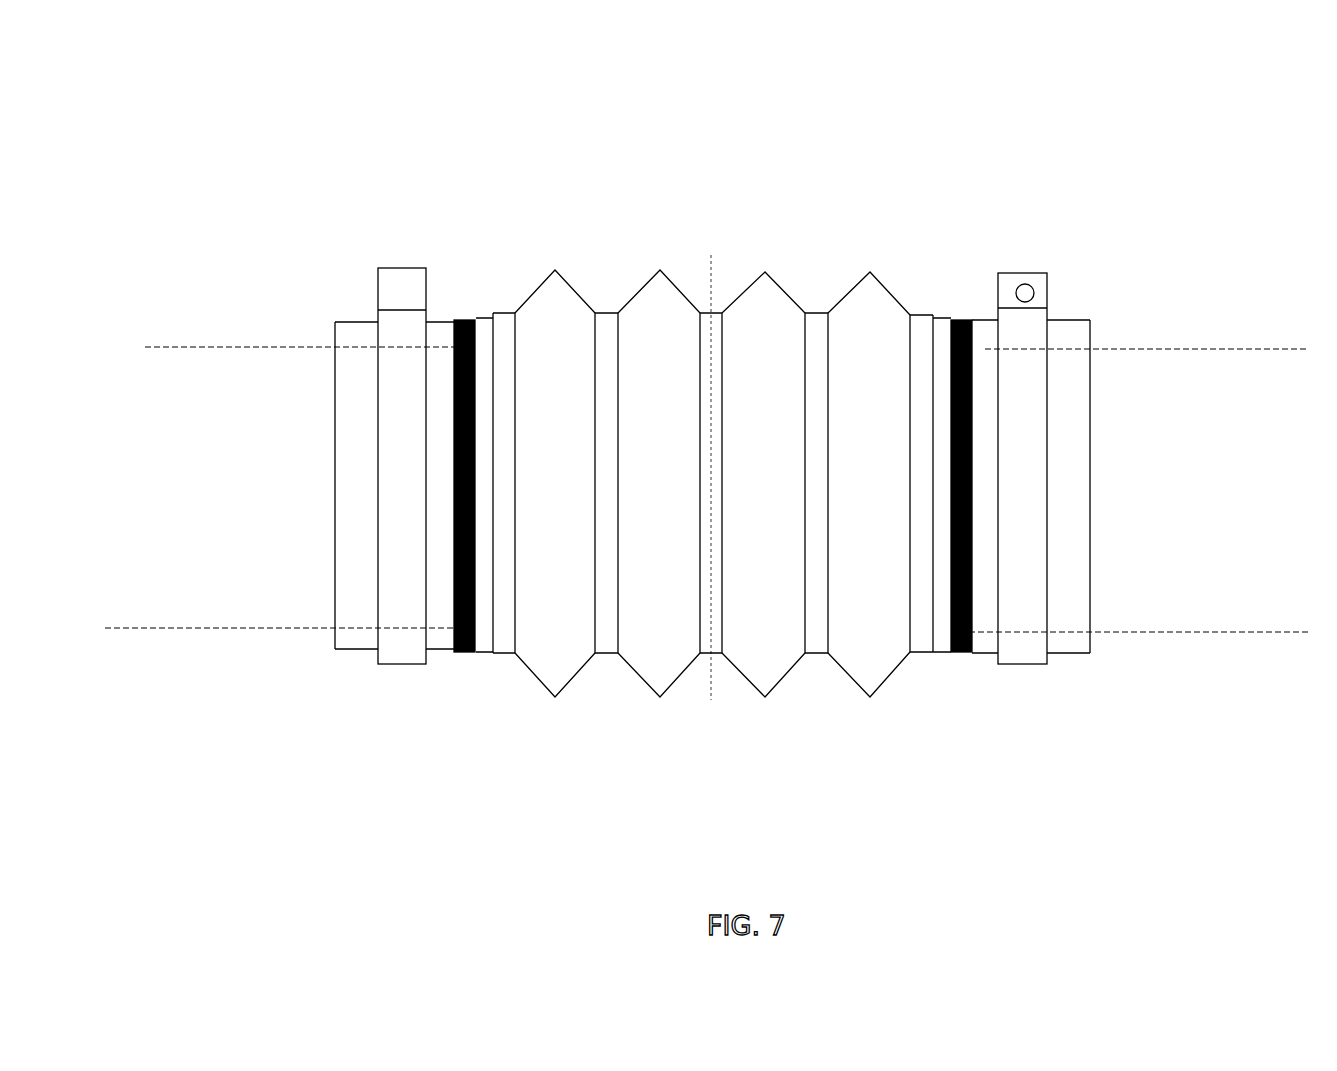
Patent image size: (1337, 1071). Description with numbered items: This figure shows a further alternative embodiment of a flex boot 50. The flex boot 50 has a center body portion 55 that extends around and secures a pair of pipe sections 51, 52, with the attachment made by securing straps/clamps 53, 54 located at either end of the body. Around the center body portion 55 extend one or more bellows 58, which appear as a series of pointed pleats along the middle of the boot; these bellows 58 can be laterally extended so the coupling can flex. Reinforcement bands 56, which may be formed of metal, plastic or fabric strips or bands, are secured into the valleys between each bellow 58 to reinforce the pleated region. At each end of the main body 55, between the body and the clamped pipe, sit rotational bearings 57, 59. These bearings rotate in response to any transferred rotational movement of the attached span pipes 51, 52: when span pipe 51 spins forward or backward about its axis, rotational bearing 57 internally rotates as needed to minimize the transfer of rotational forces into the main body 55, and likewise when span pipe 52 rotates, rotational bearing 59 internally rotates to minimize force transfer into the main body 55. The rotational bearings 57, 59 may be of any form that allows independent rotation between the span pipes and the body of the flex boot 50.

The flex boot 50 is at (798, 110).
The pipe section 51 is at (306, 363).
The pipe section 52 is at (1223, 363).
The securing strap/clamp 53 is at (406, 295).
The securing strap/clamp 54 is at (1022, 287).
The center body portion 55 is at (813, 315).
The reinforcement band 56 is at (709, 637).
The rotational bearing 57 is at (470, 652).
The bellow 58 is at (787, 653).
The rotational bearing 59 is at (965, 652).